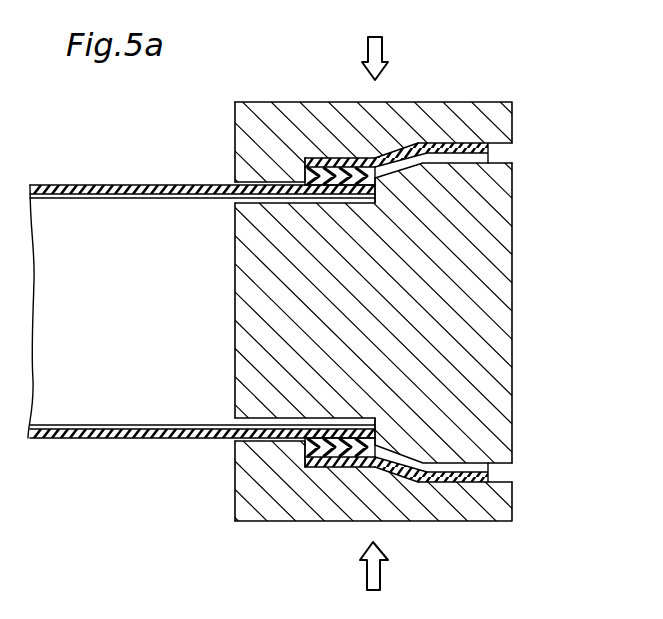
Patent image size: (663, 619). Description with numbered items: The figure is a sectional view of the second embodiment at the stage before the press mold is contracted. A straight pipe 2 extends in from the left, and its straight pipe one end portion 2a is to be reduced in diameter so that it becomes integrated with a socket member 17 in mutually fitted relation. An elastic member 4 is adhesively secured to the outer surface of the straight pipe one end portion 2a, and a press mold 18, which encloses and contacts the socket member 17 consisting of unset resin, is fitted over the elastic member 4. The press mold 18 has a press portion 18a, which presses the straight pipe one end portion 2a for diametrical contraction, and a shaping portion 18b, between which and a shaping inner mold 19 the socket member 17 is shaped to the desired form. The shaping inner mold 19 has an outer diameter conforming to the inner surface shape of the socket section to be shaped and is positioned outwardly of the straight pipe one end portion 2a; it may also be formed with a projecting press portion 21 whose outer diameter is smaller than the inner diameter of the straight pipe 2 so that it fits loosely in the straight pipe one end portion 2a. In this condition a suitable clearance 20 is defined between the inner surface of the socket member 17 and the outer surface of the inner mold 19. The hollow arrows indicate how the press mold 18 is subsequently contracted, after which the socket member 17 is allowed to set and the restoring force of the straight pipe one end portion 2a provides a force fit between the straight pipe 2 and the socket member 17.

The straight pipe 2 is at (114, 184).
The straight pipe one end portion 2a is at (318, 194).
The elastic member 4 is at (305, 163).
The socket member 17 is at (436, 143).
The press mold 18 is at (322, 158).
The press portion 18a is at (250, 176).
The shaping portion 18b is at (478, 143).
The shaping inner mold 19 is at (483, 311).
The clearance 20 is at (458, 163).
The projecting press portion 21 is at (252, 338).